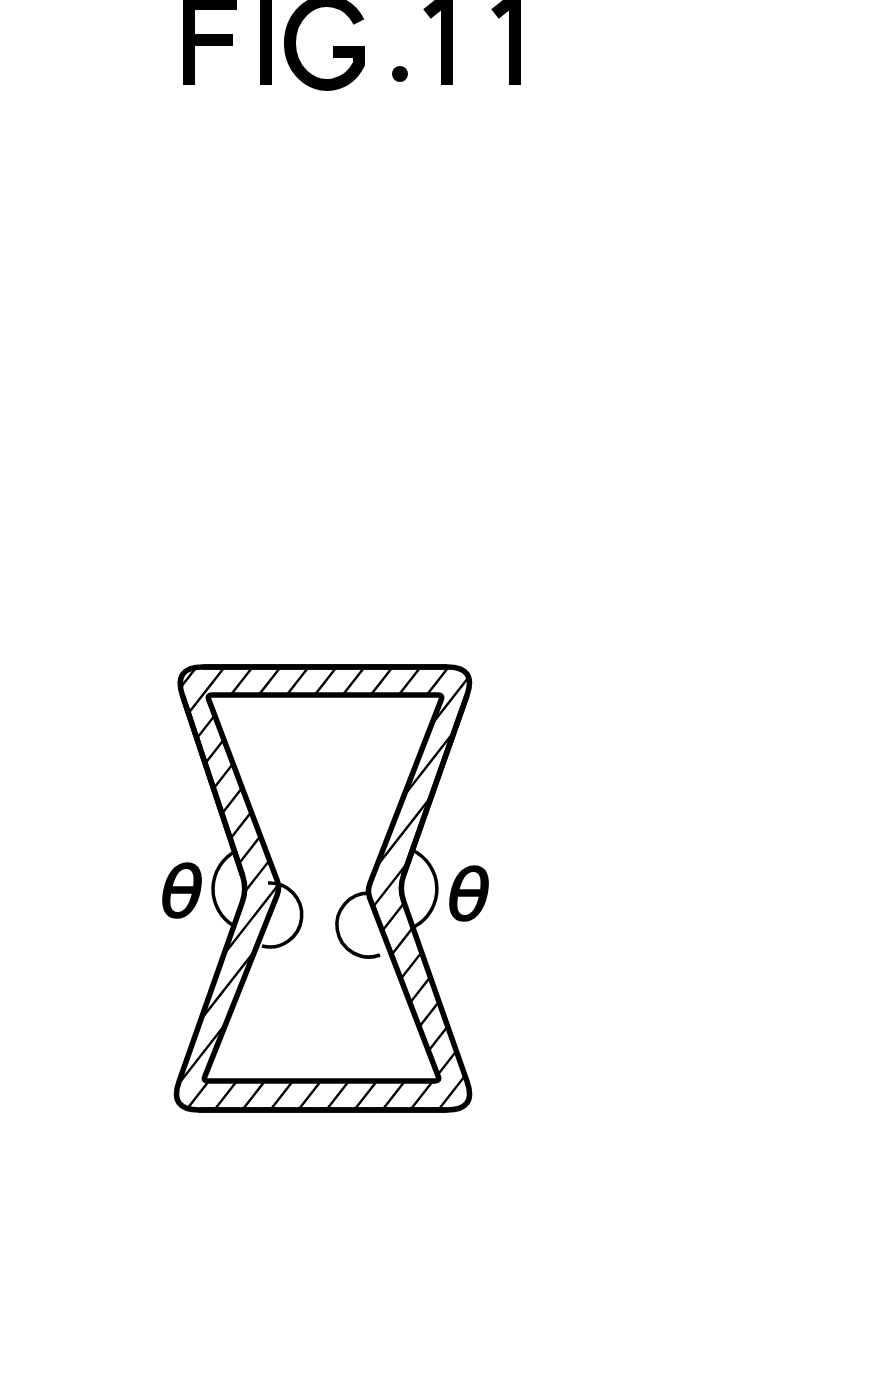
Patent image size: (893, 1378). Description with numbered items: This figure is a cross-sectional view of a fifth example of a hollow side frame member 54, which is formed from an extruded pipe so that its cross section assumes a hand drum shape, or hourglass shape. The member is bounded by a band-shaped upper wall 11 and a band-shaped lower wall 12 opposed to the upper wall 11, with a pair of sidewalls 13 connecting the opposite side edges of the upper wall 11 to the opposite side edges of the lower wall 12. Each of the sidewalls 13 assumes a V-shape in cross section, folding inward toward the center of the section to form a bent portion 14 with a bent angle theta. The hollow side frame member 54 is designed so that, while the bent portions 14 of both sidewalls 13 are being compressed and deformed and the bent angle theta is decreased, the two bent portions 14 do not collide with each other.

The upper wall 11 is at (278, 667).
The lower wall 12 is at (317, 1110).
The sidewalls 13 is at (201, 769).
The bent portions 14 is at (262, 946).
The hollow side frame member 54 is at (490, 615).